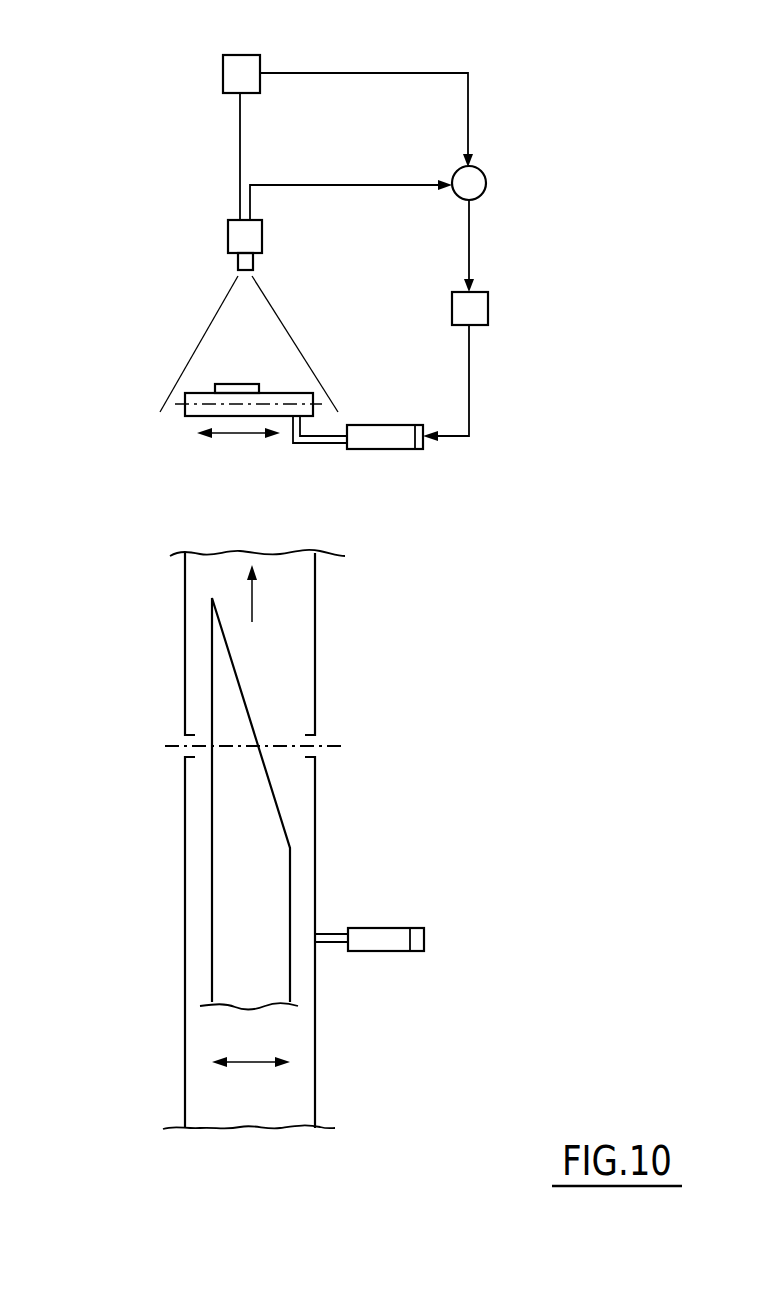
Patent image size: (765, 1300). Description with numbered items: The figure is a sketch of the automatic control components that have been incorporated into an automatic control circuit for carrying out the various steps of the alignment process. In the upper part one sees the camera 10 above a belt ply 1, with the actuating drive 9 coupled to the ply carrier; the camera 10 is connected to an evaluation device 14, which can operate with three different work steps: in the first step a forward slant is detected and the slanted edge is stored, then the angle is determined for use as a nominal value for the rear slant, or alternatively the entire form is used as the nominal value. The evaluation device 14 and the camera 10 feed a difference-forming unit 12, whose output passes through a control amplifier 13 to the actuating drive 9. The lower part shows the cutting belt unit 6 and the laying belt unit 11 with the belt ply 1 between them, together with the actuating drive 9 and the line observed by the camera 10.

The belt ply 1 is at (243, 873).
The cutting belt unit 6 is at (298, 1044).
The actuating drive 9 is at (397, 440).
The camera 10 is at (243, 237).
The laying belt unit 11 is at (293, 668).
The difference-forming unit 12 is at (475, 185).
The control amplifier 13 is at (480, 310).
The evaluation device 14 is at (232, 71).